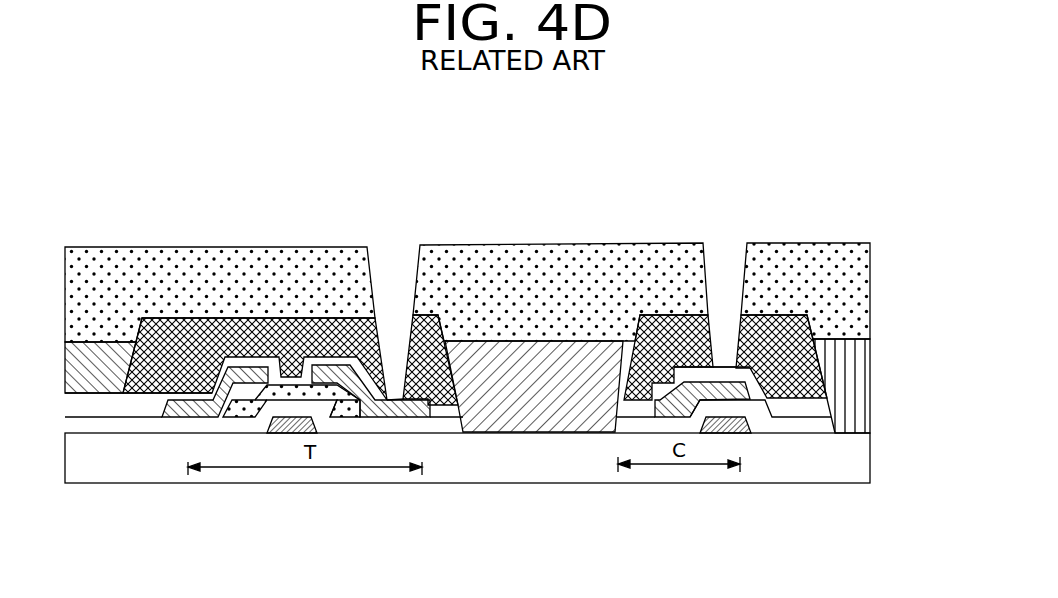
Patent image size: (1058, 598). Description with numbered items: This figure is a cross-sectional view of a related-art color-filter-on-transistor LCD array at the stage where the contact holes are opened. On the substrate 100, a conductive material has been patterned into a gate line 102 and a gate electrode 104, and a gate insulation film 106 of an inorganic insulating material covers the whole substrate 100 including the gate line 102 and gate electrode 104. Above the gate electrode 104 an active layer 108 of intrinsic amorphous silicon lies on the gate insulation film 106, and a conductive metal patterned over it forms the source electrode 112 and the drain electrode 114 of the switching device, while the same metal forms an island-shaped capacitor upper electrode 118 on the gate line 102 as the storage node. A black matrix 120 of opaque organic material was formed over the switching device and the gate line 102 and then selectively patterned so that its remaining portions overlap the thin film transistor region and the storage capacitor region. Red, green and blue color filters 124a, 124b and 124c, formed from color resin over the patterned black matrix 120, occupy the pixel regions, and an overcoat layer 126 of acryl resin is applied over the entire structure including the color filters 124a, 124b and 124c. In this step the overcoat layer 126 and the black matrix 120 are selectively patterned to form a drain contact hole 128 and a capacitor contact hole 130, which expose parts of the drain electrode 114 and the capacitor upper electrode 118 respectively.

The substrate 100 is at (560, 466).
The gate line 102 is at (725, 433).
The gate electrode 104 is at (287, 432).
The gate insulation film 106 is at (797, 423).
The active layer 108 is at (295, 383).
The source electrode 112 is at (253, 395).
The drain electrode 114 is at (345, 365).
The capacitor upper electrode 118 is at (698, 367).
The black matrix 120 is at (186, 333).
The red color filter 124a is at (96, 370).
The green color filter 124b is at (590, 380).
The blue color filter 124c is at (845, 415).
The overcoat layer 126 is at (825, 287).
The drain contact hole 128 is at (396, 278).
The capacitor contact hole 130 is at (727, 272).